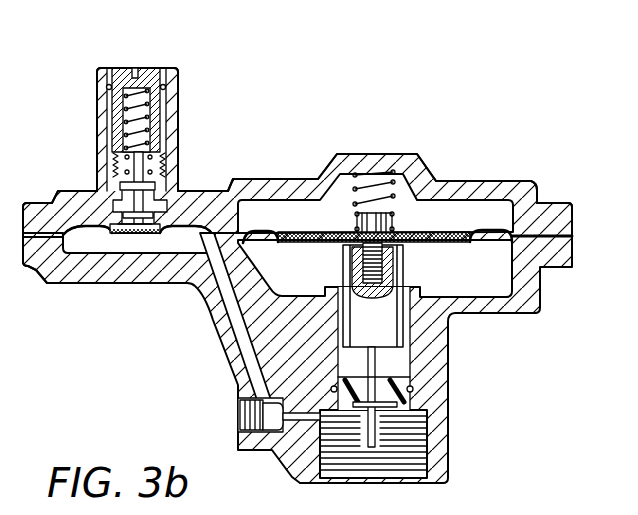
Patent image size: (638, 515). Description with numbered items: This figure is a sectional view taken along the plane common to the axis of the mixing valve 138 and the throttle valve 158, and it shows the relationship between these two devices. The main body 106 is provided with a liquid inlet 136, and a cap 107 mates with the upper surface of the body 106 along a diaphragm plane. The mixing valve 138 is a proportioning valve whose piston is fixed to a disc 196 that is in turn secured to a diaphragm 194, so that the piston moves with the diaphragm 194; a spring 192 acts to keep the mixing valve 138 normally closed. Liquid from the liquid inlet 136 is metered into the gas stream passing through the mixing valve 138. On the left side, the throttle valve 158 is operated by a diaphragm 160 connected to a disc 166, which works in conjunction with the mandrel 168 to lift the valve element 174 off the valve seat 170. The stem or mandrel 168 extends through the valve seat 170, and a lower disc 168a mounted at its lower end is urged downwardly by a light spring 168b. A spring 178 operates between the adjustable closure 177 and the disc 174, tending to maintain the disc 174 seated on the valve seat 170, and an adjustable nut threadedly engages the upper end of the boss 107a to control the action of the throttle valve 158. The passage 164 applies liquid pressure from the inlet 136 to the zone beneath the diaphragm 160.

The main body 106 is at (533, 315).
The cap 107 is at (537, 190).
The boss 107a is at (130, 179).
The liquid inlet 136 is at (400, 447).
The mixing valve 138 is at (380, 318).
The throttle valve 158 is at (178, 141).
The diaphragm 160 is at (98, 242).
The passage 164 is at (247, 358).
The disc 166 is at (212, 220).
The mandrel 168 is at (108, 200).
The lower disc 168a is at (141, 238).
The light spring 168b is at (153, 238).
The valve seat 170 is at (150, 200).
The valve element 174 is at (150, 181).
The adjustable closure 177 is at (157, 68).
The spring 178 is at (133, 115).
The spring 192 is at (393, 170).
The diaphragm 194 is at (490, 230).
The disc 196 is at (447, 245).